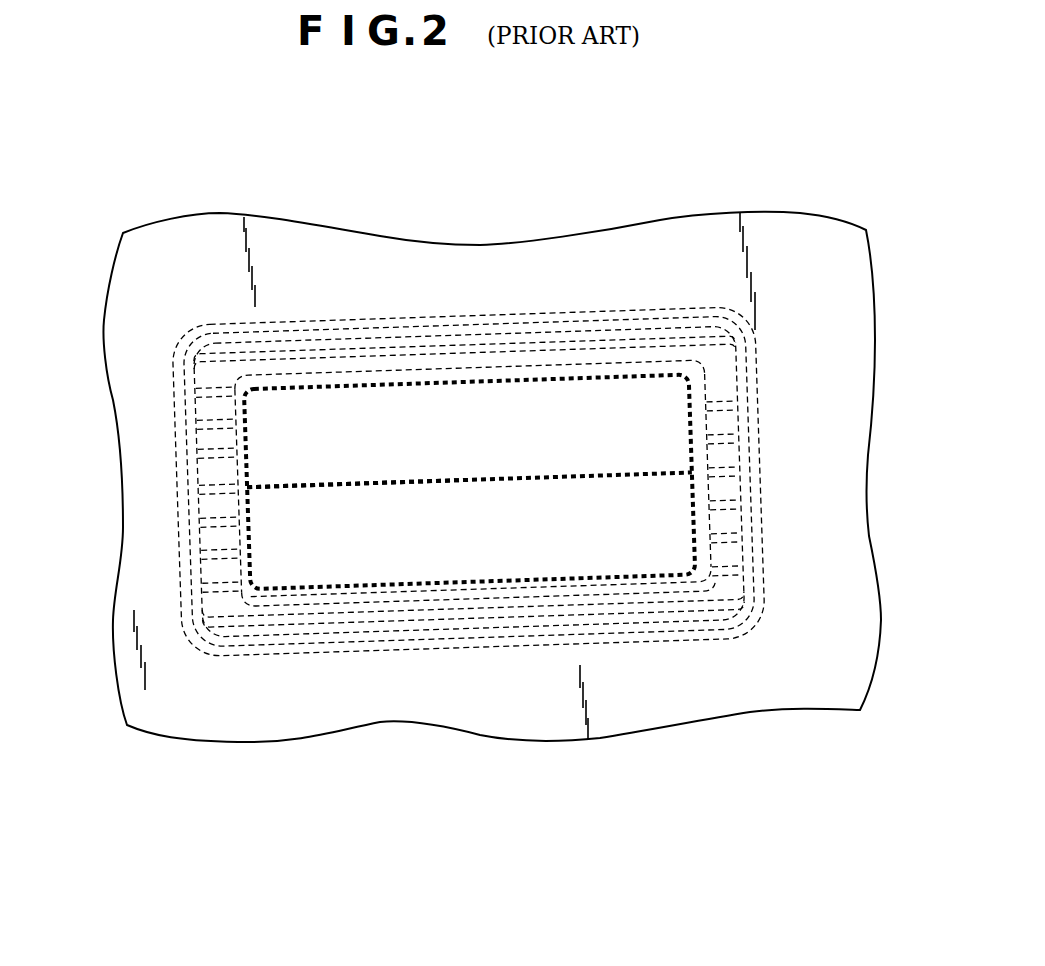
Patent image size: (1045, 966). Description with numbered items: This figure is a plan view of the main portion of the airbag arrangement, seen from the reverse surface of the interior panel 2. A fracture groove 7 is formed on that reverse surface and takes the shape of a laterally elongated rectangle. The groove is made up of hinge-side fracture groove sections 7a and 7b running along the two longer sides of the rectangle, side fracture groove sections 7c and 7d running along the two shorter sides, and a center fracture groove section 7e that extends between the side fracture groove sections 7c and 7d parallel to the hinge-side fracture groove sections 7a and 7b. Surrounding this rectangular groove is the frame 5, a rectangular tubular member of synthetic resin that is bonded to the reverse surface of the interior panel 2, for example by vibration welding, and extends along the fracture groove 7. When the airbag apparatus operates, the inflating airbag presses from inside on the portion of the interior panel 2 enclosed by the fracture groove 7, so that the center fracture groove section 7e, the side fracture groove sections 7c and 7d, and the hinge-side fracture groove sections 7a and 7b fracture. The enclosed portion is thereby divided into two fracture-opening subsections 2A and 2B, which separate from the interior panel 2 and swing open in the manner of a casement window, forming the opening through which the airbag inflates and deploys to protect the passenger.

The interior panel 2 is at (846, 422).
The fracture-opening subsection 2A is at (487, 413).
The fracture-opening subsection 2B is at (445, 538).
The frame 5 is at (351, 602).
The fracture groove 7 is at (415, 480).
The hinge-side fracture groove section 7a is at (590, 372).
The hinge-side fracture groove section 7b is at (515, 600).
The side fracture groove section 7c is at (232, 535).
The side fracture groove section 7d is at (707, 487).
The center fracture groove section 7e is at (355, 482).